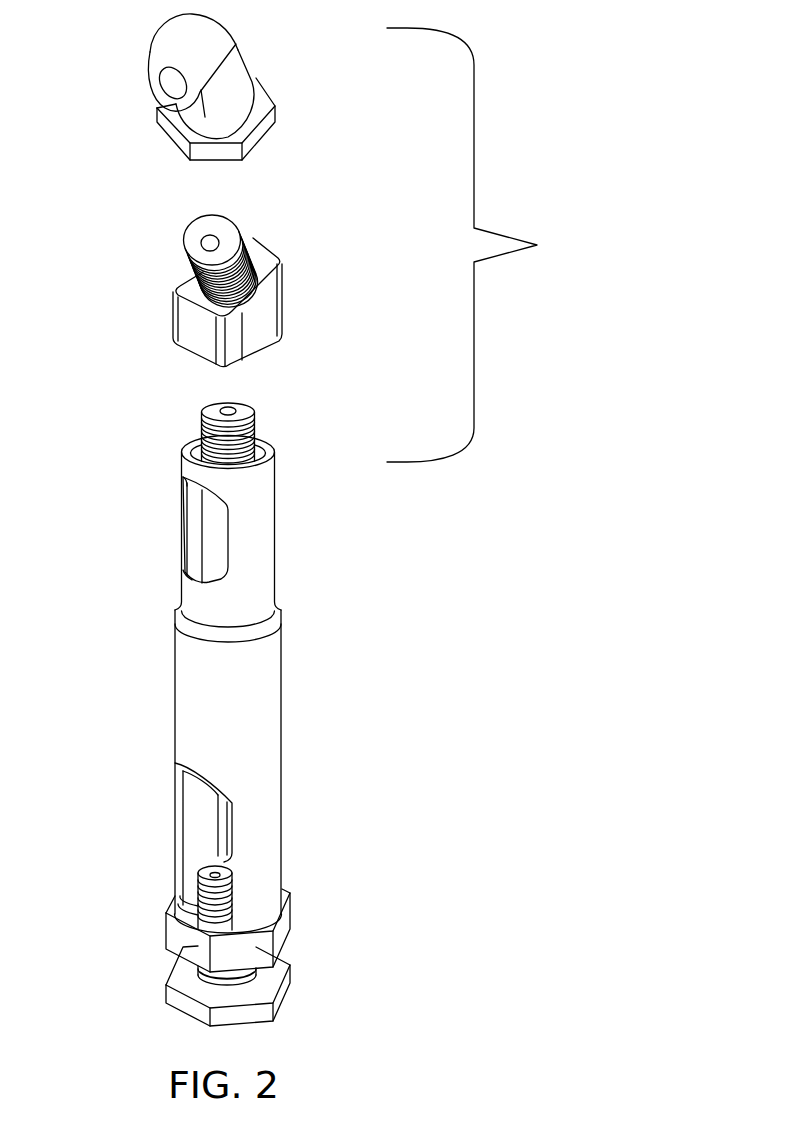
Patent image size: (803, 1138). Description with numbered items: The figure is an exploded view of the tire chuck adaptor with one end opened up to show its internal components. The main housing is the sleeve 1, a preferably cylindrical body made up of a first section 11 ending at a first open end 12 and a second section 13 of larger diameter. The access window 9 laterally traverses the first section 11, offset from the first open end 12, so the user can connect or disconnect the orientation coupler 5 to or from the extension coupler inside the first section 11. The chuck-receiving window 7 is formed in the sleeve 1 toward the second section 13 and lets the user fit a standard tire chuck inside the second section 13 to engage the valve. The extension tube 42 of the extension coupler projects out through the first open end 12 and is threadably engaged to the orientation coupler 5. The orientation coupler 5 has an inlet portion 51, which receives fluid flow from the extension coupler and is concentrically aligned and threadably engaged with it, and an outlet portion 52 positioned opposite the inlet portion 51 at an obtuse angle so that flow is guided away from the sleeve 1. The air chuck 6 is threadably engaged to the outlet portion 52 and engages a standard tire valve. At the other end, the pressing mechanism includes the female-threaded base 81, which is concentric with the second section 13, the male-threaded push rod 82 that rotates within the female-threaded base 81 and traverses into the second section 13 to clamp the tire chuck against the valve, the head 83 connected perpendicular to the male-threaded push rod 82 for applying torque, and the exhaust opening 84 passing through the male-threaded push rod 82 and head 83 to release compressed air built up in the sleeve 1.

The sleeve 1 is at (230, 682).
The first section 11 is at (266, 597).
The first open end 12 is at (262, 448).
The second section 13 is at (248, 712).
The extension tube 42 is at (206, 441).
The orientation coupler 5 is at (251, 291).
The inlet portion 51 is at (192, 251).
The outlet portion 52 is at (188, 337).
The air chuck 6 is at (147, 40).
The chuck-receiving window 7 is at (195, 827).
The access window 9 is at (194, 527).
The female-threaded base 81 is at (280, 929).
The male-threaded push rod 82 is at (188, 903).
The head 83 is at (172, 997).
The exhaust opening 84 is at (228, 872).